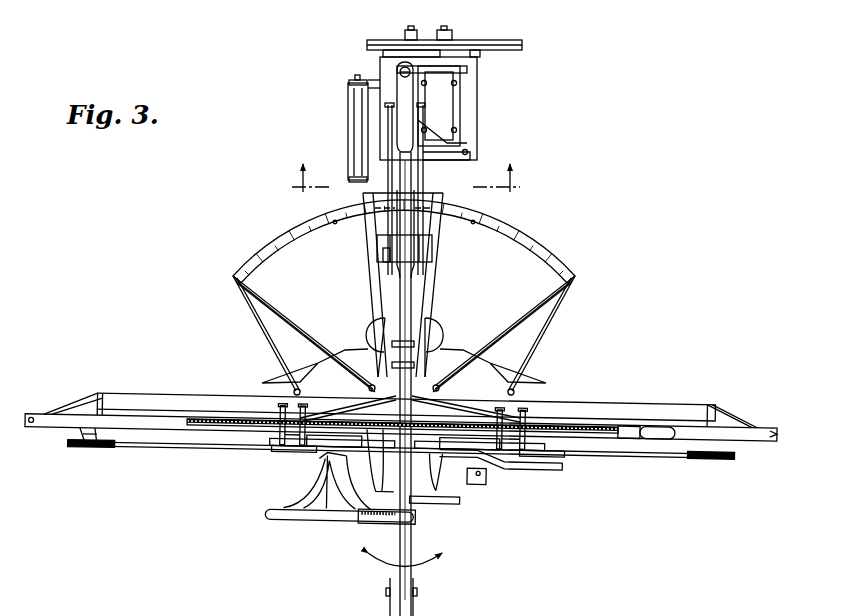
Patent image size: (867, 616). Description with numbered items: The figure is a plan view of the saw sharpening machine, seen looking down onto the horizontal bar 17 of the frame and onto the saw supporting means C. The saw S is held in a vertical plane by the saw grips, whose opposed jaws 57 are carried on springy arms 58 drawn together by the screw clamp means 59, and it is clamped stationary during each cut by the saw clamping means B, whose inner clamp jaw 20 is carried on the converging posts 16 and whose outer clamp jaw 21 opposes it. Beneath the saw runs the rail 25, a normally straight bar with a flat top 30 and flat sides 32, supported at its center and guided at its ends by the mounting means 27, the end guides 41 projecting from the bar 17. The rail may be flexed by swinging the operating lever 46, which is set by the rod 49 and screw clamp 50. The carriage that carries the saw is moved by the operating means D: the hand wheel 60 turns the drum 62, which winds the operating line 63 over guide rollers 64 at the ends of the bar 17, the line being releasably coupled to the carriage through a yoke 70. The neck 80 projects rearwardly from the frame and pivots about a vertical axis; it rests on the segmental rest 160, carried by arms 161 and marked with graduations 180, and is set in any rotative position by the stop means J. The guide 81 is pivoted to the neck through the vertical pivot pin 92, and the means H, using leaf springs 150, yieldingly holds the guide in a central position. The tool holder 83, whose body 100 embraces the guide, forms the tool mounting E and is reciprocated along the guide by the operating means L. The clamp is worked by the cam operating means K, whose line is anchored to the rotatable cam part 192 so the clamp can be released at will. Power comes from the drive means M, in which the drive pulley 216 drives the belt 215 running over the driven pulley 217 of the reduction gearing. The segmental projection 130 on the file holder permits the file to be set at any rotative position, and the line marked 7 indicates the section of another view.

The belt 215 is at (527, 48).
The drive pulley 216 is at (405, 36).
The driven pulley 217 is at (495, 57).
The power operated drive means M is at (364, 44).
The means normally yieldingly holding the tool mounting in a central position H is at (412, 118).
The vertical pivot pin 92 is at (399, 72).
The operating means for the tool holding means L is at (360, 119).
The leaf springs 150 is at (445, 162).
The section line 7- 7 is at (402, 187).
The guide 81 is at (414, 550).
The neck 80 is at (434, 255).
The segmental rest 160 is at (310, 221).
The graduations or markings 180 is at (535, 232).
The stop means J is at (346, 224).
The arms 161 is at (268, 328).
The posts 16 is at (292, 392).
The upwardly projecting arms 58 is at (514, 394).
The tool mounting E is at (438, 358).
The tool holder 83 is at (372, 378).
The body 100 is at (370, 396).
The outer clamp jaw 21 is at (440, 389).
The saw supporting means C is at (500, 408).
The bar 17 is at (196, 382).
The rail 25 is at (47, 418).
The guides 41 is at (740, 419).
The mounting means 27 is at (775, 436).
The sides 32 is at (142, 406).
The saw S is at (190, 430).
The top 30 is at (88, 452).
The guide rollers 64 is at (700, 455).
The operating line 63 is at (648, 455).
The yoke 70 is at (282, 443).
The jaws 57 is at (298, 449).
The screw clamp means 59 is at (305, 455).
The drum 62 is at (327, 481).
The inner clamp jaw 20 is at (377, 468).
The saw clamping means B is at (440, 490).
The cam part 192 is at (430, 503).
The hand wheel 60 is at (268, 517).
The segmental projection 130 is at (375, 524).
The operating means for the saw supporting means D is at (318, 521).
The operating means for the saw clamping means K is at (565, 463).
The rod 49 is at (490, 477).
The screw clamp 50 is at (486, 485).
The operating lever 46 is at (500, 472).